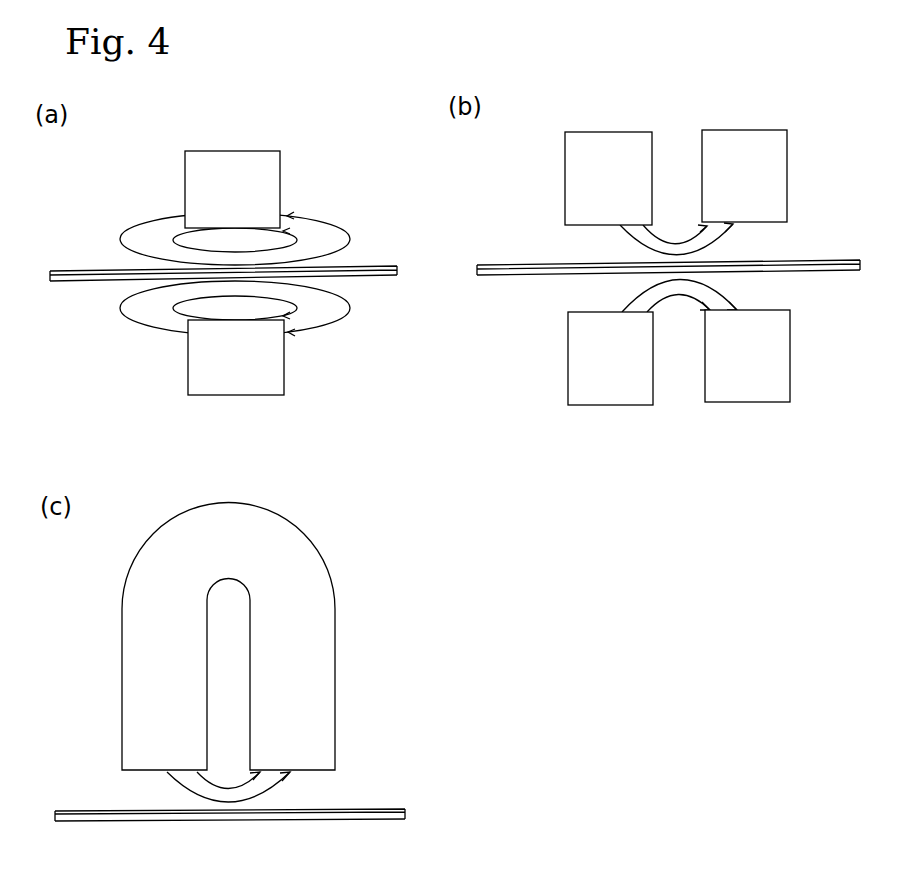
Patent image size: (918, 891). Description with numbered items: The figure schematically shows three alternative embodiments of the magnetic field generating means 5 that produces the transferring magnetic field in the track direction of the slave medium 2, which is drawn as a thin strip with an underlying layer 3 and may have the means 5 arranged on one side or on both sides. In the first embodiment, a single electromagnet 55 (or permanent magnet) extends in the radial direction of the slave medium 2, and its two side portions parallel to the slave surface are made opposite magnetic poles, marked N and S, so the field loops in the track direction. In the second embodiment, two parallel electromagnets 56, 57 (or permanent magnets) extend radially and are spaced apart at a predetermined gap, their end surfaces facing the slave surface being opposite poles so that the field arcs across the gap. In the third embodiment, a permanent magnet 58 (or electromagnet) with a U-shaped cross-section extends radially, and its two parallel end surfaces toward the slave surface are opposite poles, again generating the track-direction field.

The slave medium 2 is at (358, 266).
The magnetic recording layer 3 is at (358, 277).
The magnetic field generating means 5 is at (141, 147).
The electromagnet 55 is at (260, 150).
The electromagnet 56 is at (622, 132).
The electromagnet 57 is at (730, 130).
The permanent magnet 58 is at (325, 655).